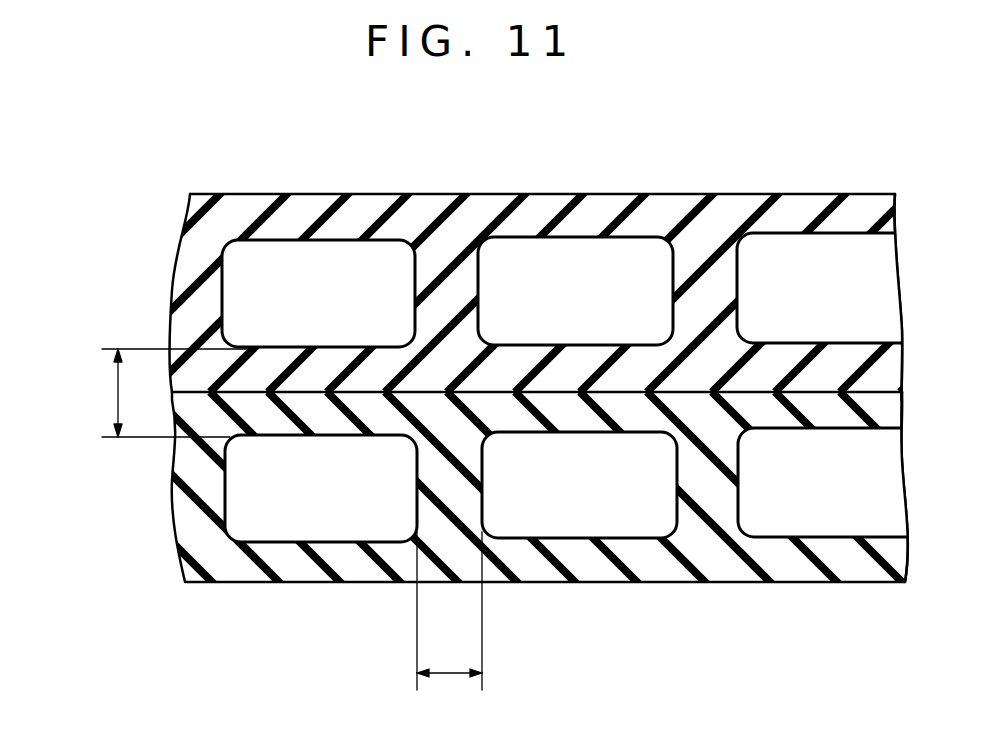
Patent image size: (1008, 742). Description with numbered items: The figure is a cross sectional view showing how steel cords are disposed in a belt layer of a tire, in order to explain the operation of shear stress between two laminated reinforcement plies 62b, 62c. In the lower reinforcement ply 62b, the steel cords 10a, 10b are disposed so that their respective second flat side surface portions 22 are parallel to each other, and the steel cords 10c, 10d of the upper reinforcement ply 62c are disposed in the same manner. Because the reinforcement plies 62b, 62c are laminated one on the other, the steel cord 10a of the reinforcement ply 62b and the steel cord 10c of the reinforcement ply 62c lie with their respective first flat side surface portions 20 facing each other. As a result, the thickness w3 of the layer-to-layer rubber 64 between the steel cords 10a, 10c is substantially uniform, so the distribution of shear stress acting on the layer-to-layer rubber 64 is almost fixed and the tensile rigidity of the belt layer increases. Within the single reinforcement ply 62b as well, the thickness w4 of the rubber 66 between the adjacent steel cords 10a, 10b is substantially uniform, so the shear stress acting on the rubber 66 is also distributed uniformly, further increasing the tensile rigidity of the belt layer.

The steel cord 10a is at (323, 518).
The steel cord 10b is at (580, 523).
The steel cord 10c is at (318, 257).
The steel cord 10d is at (572, 252).
The first flat side surface portion 20 is at (263, 352).
The second flat side surface portion 22 is at (478, 452).
The reinforcement ply 62b is at (190, 537).
The reinforcement ply 62c is at (193, 272).
The layer-to-layer rubber 64 is at (377, 365).
The rubber 66 is at (452, 527).
The thickness of layer-to-layer rubber w3 is at (115, 395).
The thickness of rubber w4 is at (450, 672).